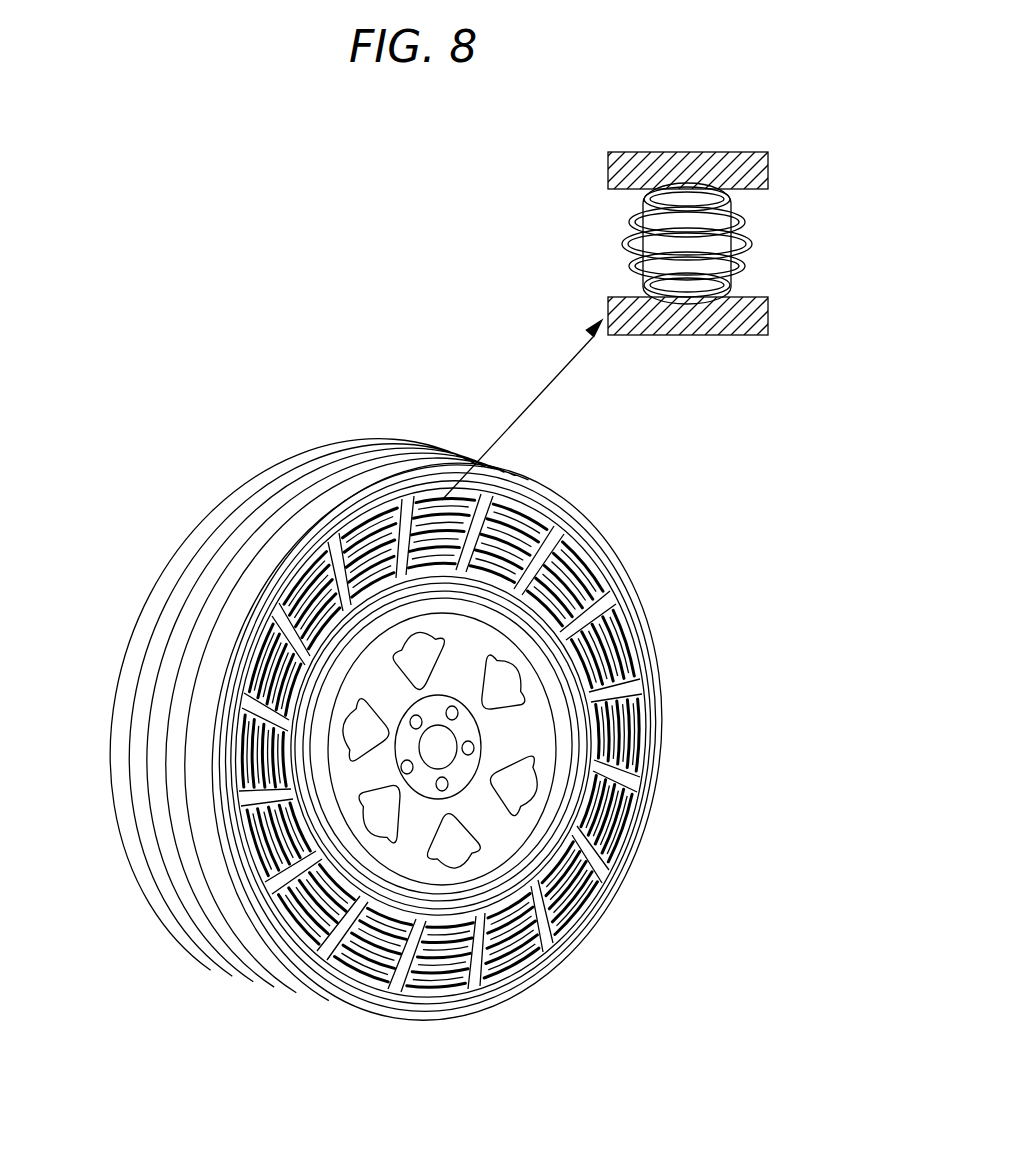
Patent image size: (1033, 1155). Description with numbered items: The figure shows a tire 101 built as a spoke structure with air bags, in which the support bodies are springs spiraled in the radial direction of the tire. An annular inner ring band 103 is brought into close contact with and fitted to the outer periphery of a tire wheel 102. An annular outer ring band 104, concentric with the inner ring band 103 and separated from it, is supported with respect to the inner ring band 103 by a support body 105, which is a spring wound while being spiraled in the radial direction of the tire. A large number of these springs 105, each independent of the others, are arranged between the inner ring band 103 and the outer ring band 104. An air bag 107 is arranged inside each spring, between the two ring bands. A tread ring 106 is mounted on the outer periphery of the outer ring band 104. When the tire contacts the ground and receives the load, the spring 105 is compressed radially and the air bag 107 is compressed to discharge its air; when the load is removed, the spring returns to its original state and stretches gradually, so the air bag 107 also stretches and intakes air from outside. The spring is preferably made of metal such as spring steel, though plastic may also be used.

The tire 101 is at (177, 456).
The tire wheel 102 is at (558, 748).
The inner ring band 103 is at (572, 770).
The outer ring band 104 is at (613, 563).
The support body (spring) 105 is at (632, 695).
The tread ring 106 is at (345, 466).
The air bag 107 is at (585, 880).